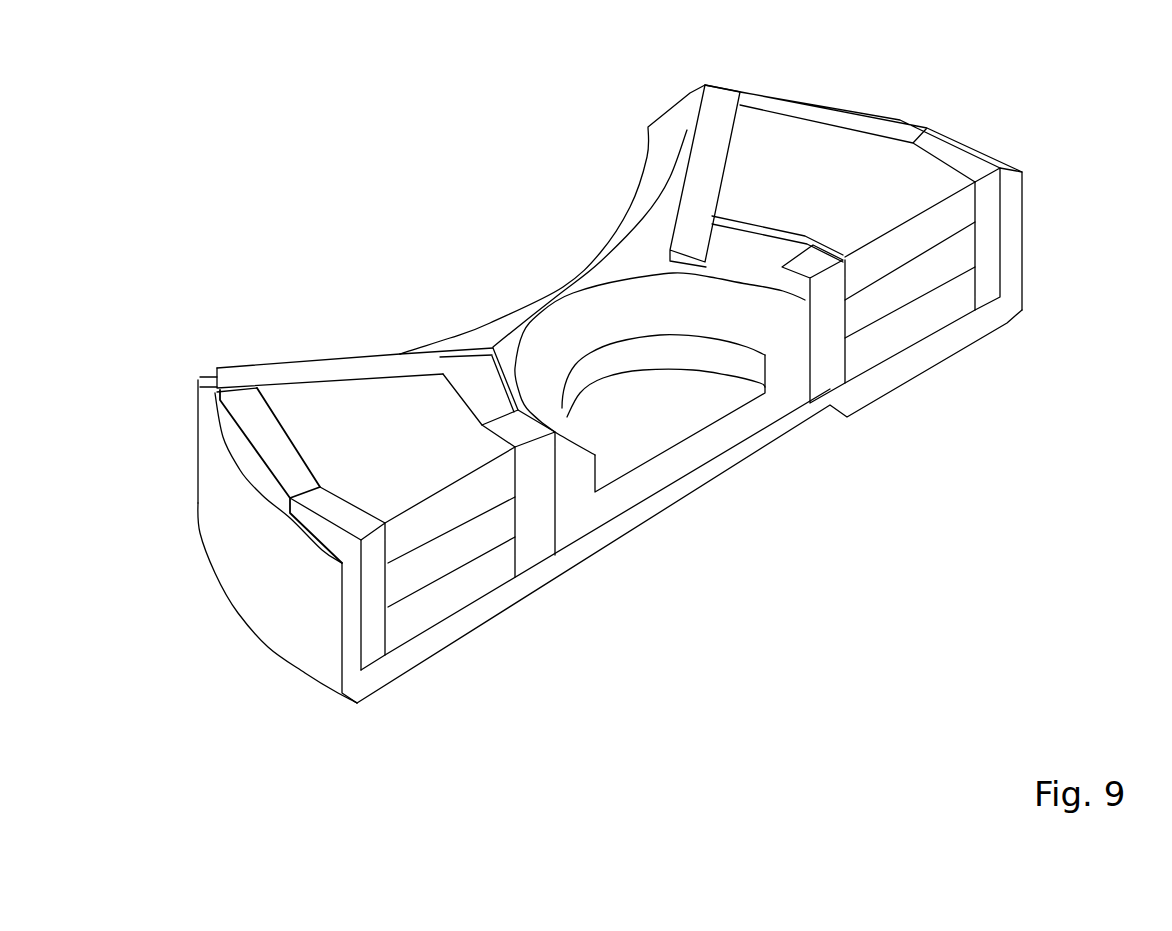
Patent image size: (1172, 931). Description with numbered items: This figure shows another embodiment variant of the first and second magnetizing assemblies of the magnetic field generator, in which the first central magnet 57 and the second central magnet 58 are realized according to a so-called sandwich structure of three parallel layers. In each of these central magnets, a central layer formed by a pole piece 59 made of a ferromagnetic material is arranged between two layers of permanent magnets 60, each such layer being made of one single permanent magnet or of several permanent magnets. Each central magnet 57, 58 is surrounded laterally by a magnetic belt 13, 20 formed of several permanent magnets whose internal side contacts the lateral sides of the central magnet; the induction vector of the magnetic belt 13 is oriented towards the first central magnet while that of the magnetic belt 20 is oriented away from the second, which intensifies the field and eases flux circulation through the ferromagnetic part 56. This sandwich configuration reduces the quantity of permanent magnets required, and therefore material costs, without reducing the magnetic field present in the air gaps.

The magnetic belt 13 is at (345, 513).
The magnetic belt 20 is at (943, 150).
The ferromagnetic part 56 is at (660, 470).
The first central magnet 57 is at (373, 398).
The second central magnet 58 is at (855, 163).
The pole piece 59 is at (445, 553).
The permanent magnets 60 is at (482, 495).